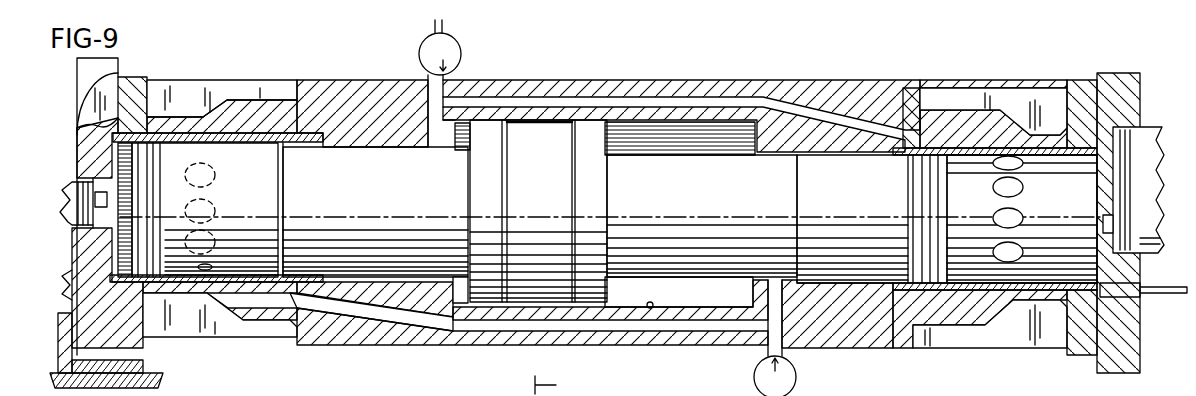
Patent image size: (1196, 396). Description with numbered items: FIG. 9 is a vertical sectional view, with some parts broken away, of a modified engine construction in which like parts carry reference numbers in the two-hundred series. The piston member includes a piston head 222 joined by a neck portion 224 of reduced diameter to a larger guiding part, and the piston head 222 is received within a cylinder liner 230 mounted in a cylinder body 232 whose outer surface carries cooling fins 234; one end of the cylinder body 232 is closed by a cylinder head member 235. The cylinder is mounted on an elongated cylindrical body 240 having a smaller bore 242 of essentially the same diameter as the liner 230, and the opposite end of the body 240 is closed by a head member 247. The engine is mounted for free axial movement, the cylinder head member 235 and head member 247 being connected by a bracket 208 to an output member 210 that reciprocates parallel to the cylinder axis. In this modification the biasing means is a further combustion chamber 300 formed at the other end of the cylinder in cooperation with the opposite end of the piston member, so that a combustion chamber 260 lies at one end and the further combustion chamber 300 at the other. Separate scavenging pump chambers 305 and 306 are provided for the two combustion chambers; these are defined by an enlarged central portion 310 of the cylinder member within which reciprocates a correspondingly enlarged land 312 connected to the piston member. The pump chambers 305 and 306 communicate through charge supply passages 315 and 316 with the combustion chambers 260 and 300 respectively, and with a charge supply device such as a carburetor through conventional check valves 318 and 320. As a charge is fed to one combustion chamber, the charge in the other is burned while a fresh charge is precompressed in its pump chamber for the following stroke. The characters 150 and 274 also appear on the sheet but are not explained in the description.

The actuator assembly 150 is at (566, 386).
The bracket 208 is at (143, 370).
The output member 210 is at (163, 380).
The piston head 222 is at (265, 197).
The neck portion 224 is at (378, 206).
The cylinder liner 230 is at (258, 140).
The cylinder body 232 is at (133, 83).
The cooling fins 234 is at (205, 90).
The cylinder head member 235 is at (85, 75).
The elongated cylindrical body 240 is at (582, 82).
The smaller bore 242 is at (347, 143).
The head member 247 is at (1122, 77).
The combustion chamber 260 is at (118, 173).
The lower bearing 274 is at (460, 308).
The further combustion chamber 300 is at (1037, 268).
The scavenging pump chamber 305 is at (678, 123).
The scavenging pump chamber 306 is at (462, 122).
The enlarged central portion 310 is at (648, 308).
The enlarged land 312 is at (548, 212).
The charge supply passage 315 is at (408, 318).
The charge supply passage 316 is at (773, 100).
The check valve 318 is at (797, 375).
The check valve 320 is at (419, 48).